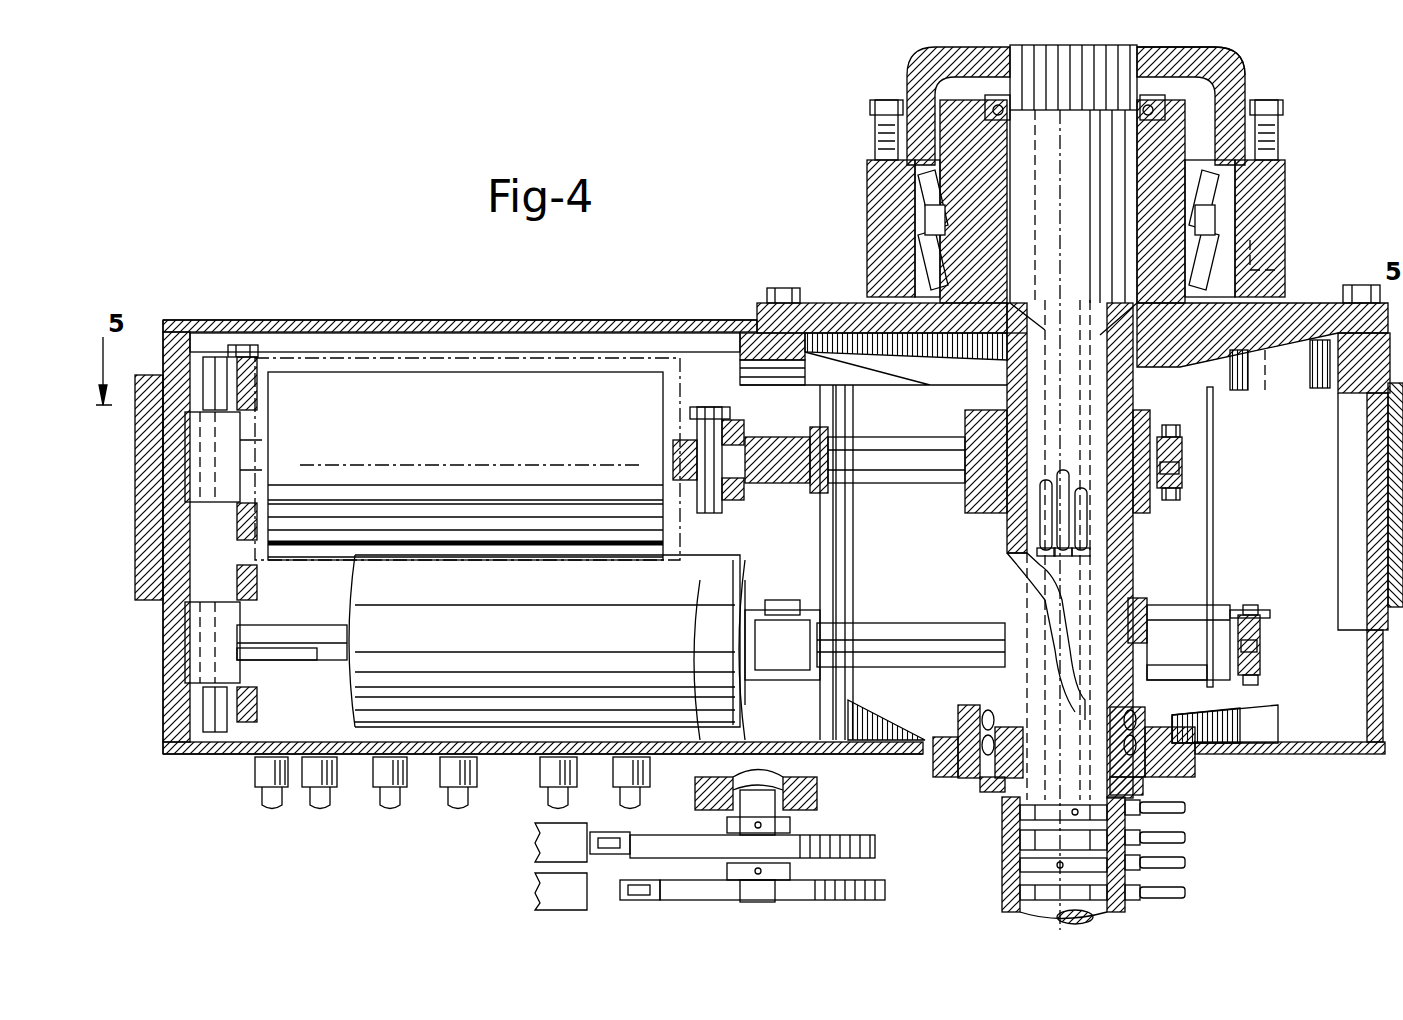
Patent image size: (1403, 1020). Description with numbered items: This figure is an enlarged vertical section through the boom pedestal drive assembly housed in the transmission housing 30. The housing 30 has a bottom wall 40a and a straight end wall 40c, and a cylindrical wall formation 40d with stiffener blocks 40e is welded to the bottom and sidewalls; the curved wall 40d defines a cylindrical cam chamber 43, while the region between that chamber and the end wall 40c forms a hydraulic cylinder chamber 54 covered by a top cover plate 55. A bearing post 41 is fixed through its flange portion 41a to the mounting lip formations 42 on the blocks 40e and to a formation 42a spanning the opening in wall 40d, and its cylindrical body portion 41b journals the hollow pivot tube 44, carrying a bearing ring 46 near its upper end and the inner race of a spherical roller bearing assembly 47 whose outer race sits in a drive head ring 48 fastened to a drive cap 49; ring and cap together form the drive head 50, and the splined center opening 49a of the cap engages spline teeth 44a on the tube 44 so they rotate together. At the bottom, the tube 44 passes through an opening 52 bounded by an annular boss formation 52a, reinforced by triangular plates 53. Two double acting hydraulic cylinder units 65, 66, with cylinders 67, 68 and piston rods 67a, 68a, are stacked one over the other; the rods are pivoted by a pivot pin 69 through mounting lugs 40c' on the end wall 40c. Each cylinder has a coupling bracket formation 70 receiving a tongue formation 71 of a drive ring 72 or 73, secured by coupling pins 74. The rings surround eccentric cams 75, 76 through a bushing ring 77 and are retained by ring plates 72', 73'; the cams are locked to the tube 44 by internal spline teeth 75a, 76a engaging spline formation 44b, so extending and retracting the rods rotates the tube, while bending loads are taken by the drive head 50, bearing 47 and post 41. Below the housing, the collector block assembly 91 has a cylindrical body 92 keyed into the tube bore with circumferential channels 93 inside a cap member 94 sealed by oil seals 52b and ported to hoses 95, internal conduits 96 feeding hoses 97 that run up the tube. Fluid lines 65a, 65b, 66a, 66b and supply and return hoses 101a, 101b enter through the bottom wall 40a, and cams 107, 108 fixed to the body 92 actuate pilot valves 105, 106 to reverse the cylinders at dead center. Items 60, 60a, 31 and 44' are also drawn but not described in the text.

The transmission housing 30 is at (272, 312).
The top cover plate 55 is at (370, 318).
The hydraulic cylinder chamber 54 is at (492, 345).
The straight end wall 40c is at (142, 537).
The bottom wall 40a is at (245, 754).
The cylindrical wall formation 40d is at (1388, 754).
The stiffener blocks 40e is at (1205, 545).
The bearing post 41 is at (1312, 305).
The flange portion 41a is at (840, 302).
The cylindrical body portion 41b is at (995, 250).
The drive head 50 is at (905, 85).
The drive cap 49 is at (1245, 95).
The splined center opening 49a is at (1140, 75).
The bearing ring 46 is at (1155, 102).
The spline teeth 44a is at (1090, 120).
The bearing outer race 60 is at (868, 205).
The spherical roller bearing assembly 47 is at (925, 195).
The drive head ring 48 is at (1285, 210).
The outer race lip 60a is at (1285, 250).
The bolt 31 is at (1282, 140).
The pivot tube 44 is at (1095, 520).
The spline formation 44b is at (1005, 385).
The shaft lower portion 44' is at (1153, 598).
The hoses 97 is at (1082, 485).
The internal conduits 96 is at (1035, 565).
The internal spline teeth 75a is at (1150, 530).
The drive ring 72 is at (1202, 458).
The bushing ring 77 is at (1185, 475).
The ring plates 72' is at (1207, 447).
The cylindrical chamber 43 is at (1247, 384).
The mounting lip formations 42 is at (1320, 392).
The eccentric cam 76 is at (1165, 615).
The internal spline teeth 76a is at (1130, 682).
The drive ring 73 is at (1272, 634).
The ring plates 73' is at (1278, 626).
The reinforcing plates 53 is at (1275, 716).
The opening 52 is at (958, 710).
The annular boss formation 52a is at (1165, 710).
The oil seals 52b is at (1140, 772).
The collector block assembly 91 is at (985, 830).
The cylindrical body 92 is at (1020, 797).
The fluid conveying circumferential channels 93 is at (1020, 858).
The cap member 94 is at (1010, 893).
The hydraulic fluid hoses 95 is at (1195, 822).
The coupling bracket formation 70 is at (715, 400).
The coupling pins 74 is at (713, 518).
The tongue formation 71 is at (768, 435).
The eccentric cam 75 is at (850, 440).
The formation 42a is at (830, 373).
The hydraulic cylinder unit 65 is at (342, 366).
The cylinder 67 is at (490, 372).
The hydraulic cylinder unit 66 is at (547, 641).
The cylinder 68 is at (345, 595).
The piston rod 68a is at (318, 652).
The piston rod 67a is at (262, 447).
The mounting lugs 40c' is at (276, 544).
The pivot pin 69 is at (232, 345).
The hydraulic fluid line 65a is at (260, 793).
The hydraulic fluid line 65b is at (325, 808).
The hydraulic fluid line 66a is at (390, 808).
The hydraulic fluid line 66b is at (465, 808).
The hydraulic fluid supply hose 101a is at (545, 796).
The hydraulic fluid return hose 101b is at (640, 808).
The pilot valve 105 is at (532, 843).
The pilot valve 106 is at (532, 893).
The cam 107 is at (835, 835).
The cam 108 is at (835, 880).